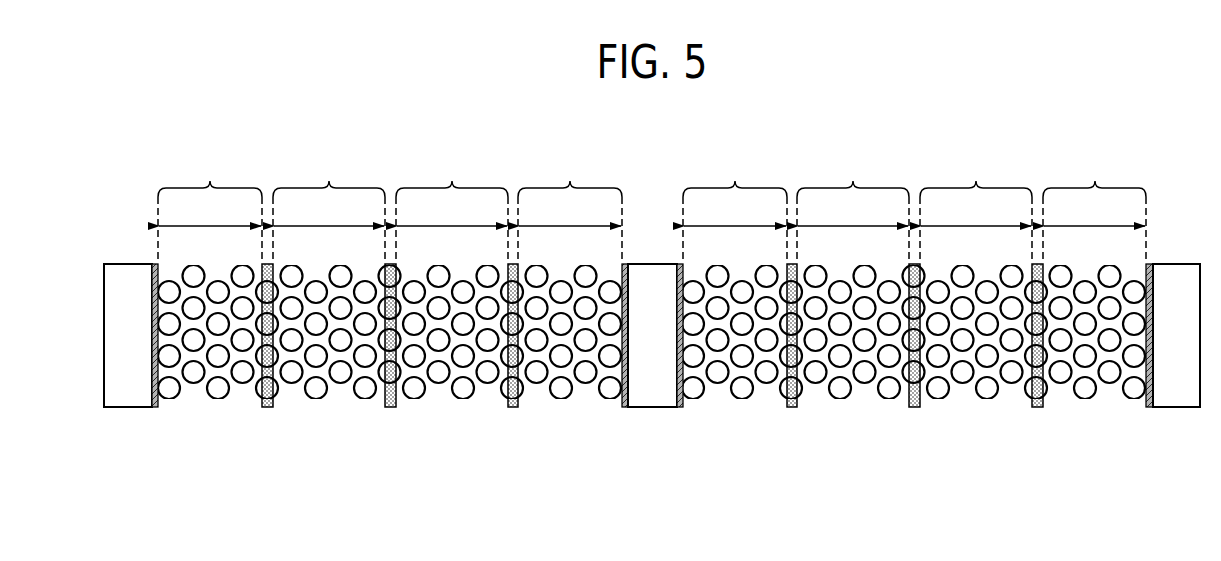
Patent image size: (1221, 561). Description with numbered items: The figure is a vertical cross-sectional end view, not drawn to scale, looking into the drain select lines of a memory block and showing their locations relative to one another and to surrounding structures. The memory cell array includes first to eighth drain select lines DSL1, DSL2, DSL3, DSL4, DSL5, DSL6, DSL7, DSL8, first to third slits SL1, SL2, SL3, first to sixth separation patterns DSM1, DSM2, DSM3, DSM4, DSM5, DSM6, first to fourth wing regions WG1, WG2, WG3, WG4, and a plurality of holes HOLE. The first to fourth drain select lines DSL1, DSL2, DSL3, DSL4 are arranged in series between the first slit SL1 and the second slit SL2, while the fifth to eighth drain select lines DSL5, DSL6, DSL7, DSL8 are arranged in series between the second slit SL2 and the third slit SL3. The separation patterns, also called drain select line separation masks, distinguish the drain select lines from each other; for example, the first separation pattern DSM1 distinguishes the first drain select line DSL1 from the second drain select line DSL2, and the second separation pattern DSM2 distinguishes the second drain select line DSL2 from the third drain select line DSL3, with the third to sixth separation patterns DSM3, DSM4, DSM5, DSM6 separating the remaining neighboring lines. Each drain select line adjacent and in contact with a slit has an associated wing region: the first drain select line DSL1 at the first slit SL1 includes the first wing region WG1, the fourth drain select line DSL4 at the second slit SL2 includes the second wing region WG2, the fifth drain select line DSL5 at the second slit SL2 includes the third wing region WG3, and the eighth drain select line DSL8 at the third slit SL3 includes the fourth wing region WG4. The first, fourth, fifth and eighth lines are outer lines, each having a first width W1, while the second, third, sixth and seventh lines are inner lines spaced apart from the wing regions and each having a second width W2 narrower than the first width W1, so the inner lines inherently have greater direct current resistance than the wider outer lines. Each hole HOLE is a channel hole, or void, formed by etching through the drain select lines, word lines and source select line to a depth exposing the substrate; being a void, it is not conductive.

The first slit SL1 is at (128, 408).
The second slit SL2 is at (652, 408).
The third slit SL3 is at (1177, 408).
The first wing region WG1 is at (155, 408).
The second wing region WG2 is at (625, 408).
The third wing region WG3 is at (680, 408).
The fourth wing region WG4 is at (1150, 408).
The first separation pattern DSM1 is at (267, 408).
The second separation pattern DSM2 is at (390, 408).
The third separation pattern DSM3 is at (513, 408).
The fourth separation pattern DSM4 is at (792, 408).
The fifth separation pattern DSM5 is at (915, 408).
The sixth separation pattern DSM6 is at (1037, 408).
The first drain select line DSL1 is at (210, 207).
The second drain select line DSL2 is at (329, 207).
The third drain select line DSL3 is at (452, 207).
The fourth drain select line DSL4 is at (570, 207).
The fifth drain select line DSL5 is at (735, 207).
The sixth drain select line DSL6 is at (853, 207).
The seventh drain select line DSL7 is at (976, 207).
The eighth drain select line DSL8 is at (1094, 207).
The first width W1 is at (652, 212).
The second width W2 is at (652, 212).
The hole HOLE is at (219, 396).